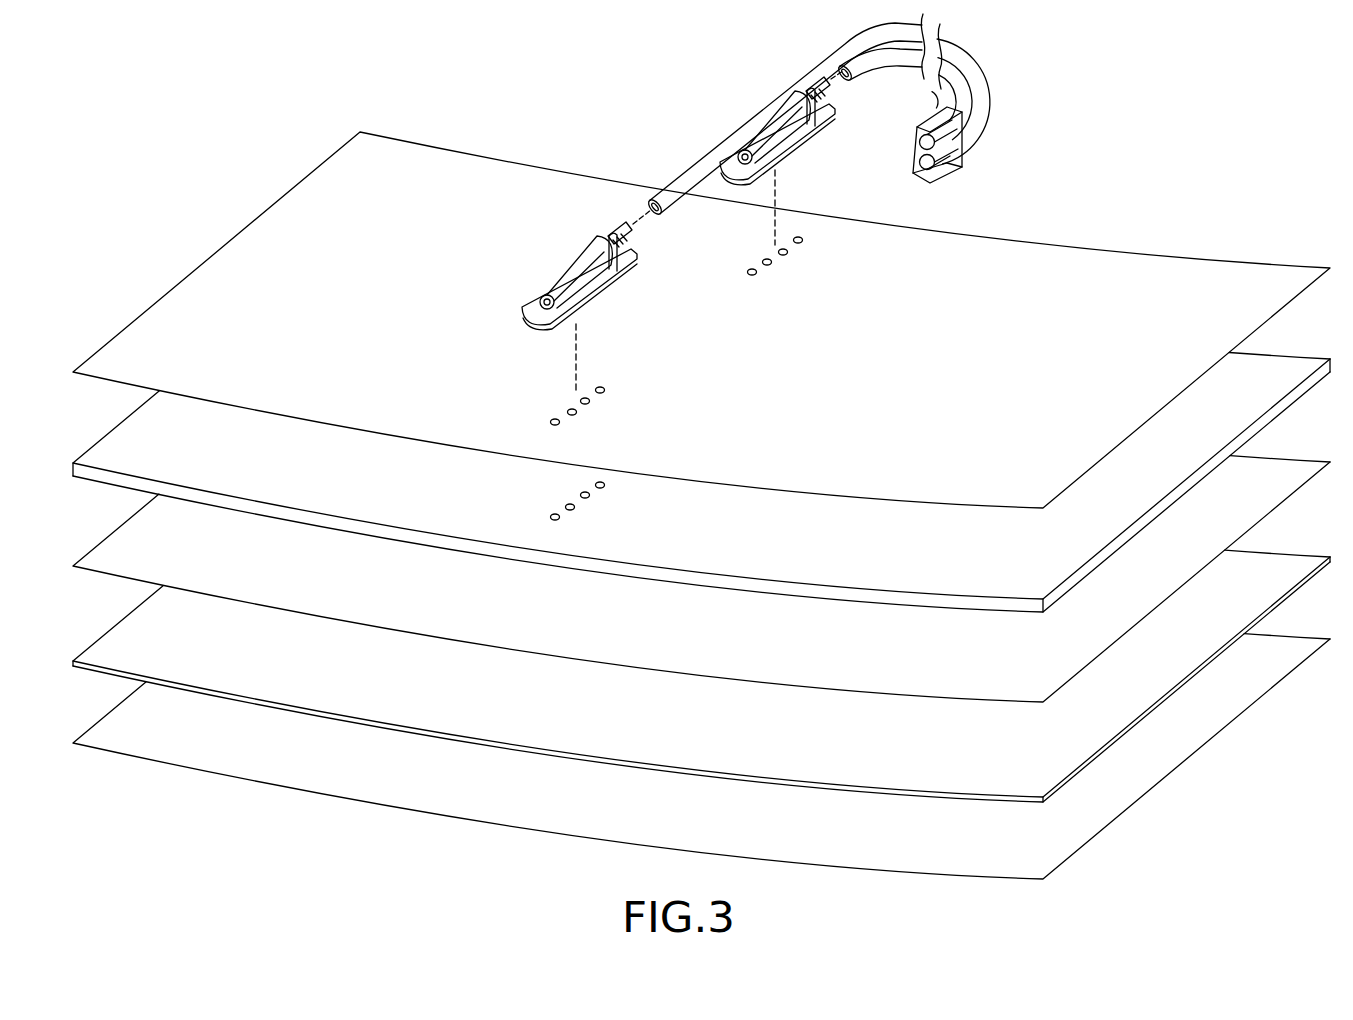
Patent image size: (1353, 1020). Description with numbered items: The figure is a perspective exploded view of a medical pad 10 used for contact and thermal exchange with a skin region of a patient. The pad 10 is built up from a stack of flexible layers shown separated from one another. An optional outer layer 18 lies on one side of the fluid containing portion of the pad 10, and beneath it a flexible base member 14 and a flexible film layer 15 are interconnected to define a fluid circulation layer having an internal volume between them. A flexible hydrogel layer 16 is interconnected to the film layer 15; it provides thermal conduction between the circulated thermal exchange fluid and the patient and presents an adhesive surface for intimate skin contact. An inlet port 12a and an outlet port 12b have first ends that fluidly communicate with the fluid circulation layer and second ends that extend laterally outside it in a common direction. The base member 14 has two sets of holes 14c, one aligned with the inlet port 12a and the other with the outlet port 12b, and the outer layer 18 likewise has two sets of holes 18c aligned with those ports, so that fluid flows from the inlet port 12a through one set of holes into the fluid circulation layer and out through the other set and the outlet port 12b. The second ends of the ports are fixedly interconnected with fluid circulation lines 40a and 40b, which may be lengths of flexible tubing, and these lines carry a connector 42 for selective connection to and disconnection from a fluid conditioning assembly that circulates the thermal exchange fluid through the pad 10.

The medical pad 10 is at (1200, 106).
The inlet port 12a is at (575, 270).
The outlet port 12b is at (792, 128).
The base member 14 is at (1295, 372).
The holes 14c is at (553, 515).
The film layer 15 is at (1295, 473).
The hydrogel layer 16 is at (1295, 570).
The outer layer 18 is at (1295, 277).
The holes 18c is at (557, 420).
The fluid circulation line 40a is at (976, 68).
The fluid circulation line 40b is at (980, 120).
The connector 42 is at (957, 162).